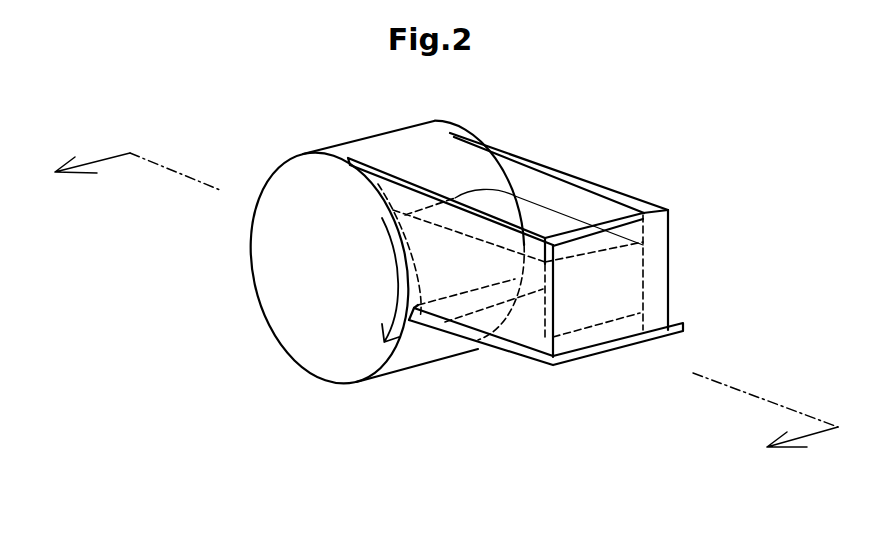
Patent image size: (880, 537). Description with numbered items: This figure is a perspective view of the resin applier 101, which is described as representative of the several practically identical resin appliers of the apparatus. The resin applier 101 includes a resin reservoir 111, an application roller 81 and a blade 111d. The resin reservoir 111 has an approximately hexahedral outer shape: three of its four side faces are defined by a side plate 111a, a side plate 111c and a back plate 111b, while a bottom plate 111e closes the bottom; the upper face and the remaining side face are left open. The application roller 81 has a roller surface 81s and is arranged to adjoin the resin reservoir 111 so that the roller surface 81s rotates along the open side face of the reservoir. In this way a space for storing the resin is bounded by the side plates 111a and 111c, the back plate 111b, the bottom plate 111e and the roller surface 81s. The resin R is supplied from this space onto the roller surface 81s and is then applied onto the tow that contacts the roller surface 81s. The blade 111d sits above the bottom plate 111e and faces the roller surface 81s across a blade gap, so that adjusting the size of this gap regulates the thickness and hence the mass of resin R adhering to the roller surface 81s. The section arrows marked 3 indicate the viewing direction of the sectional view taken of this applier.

The resin applier 101 is at (730, 153).
The application roller 81 is at (291, 160).
The roller surface 81s is at (395, 153).
The resin reservoir 111 is at (591, 182).
The side plate 111a is at (481, 288).
The back plate 111b is at (620, 287).
The side plate 111c is at (542, 185).
The blade 111d is at (416, 320).
The bottom plate 111e is at (564, 318).
The resin R is at (627, 263).
The section line for FIG. 3 is at (434, 310).